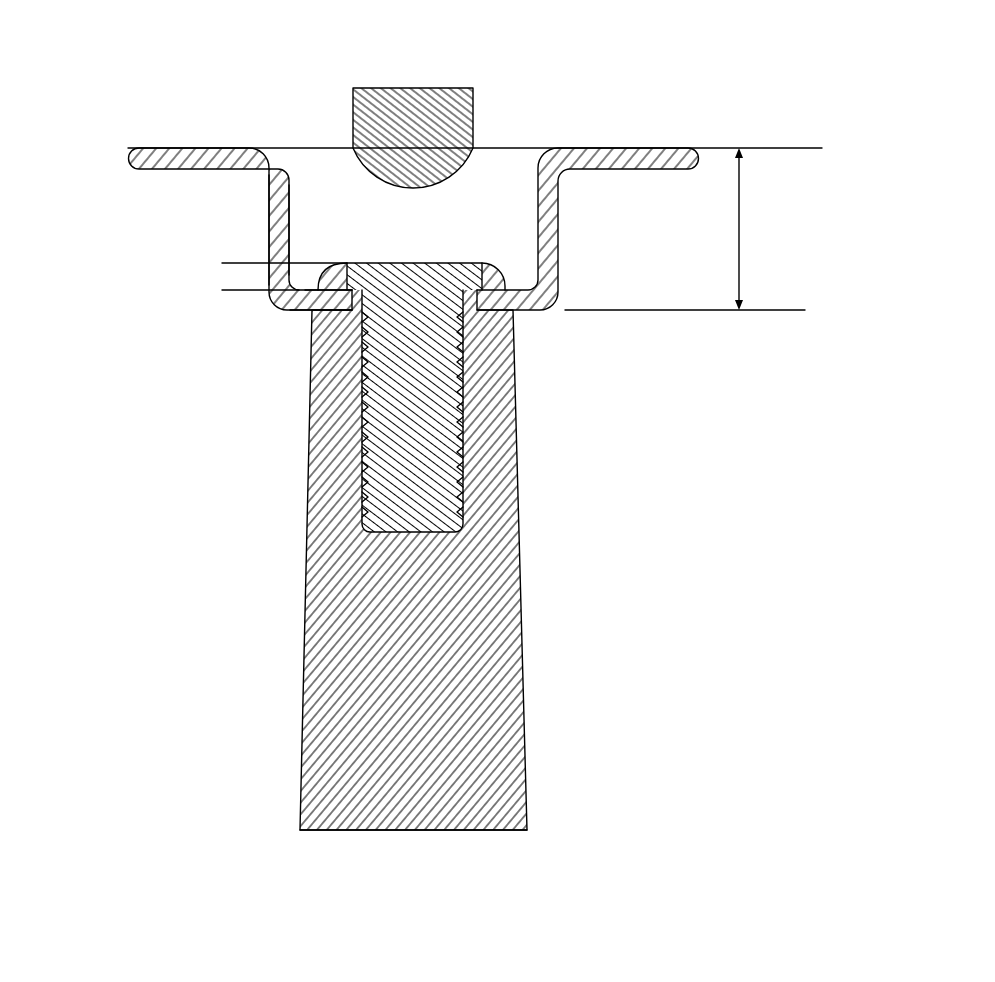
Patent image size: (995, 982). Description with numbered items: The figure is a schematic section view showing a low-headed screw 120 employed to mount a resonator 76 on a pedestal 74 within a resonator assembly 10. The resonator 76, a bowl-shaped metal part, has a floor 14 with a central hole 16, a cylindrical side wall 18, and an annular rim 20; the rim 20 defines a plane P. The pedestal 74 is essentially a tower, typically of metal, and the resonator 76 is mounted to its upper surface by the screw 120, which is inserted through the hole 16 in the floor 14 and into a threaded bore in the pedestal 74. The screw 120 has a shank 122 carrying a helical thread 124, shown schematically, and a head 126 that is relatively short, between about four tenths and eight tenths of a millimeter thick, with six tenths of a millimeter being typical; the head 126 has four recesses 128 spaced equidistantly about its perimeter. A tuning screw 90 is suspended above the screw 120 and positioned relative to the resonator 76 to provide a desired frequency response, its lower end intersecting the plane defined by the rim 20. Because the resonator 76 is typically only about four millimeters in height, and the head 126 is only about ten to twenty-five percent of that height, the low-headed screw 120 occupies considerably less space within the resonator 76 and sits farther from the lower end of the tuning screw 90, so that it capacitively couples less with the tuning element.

The resonator assembly 10 is at (540, 107).
The floor 14 is at (297, 300).
The central hole 16 is at (348, 323).
The cylindrical side wall 18 is at (280, 222).
The annular rim 20 is at (641, 157).
The pedestal 74 is at (317, 622).
The resonator 76 is at (678, 127).
The tuning screw 90 is at (388, 110).
The low-headed screw 120 is at (498, 382).
The shank 122 is at (482, 518).
The helical thread 124 is at (460, 467).
The head 126 is at (440, 263).
The recesses 128 is at (493, 278).